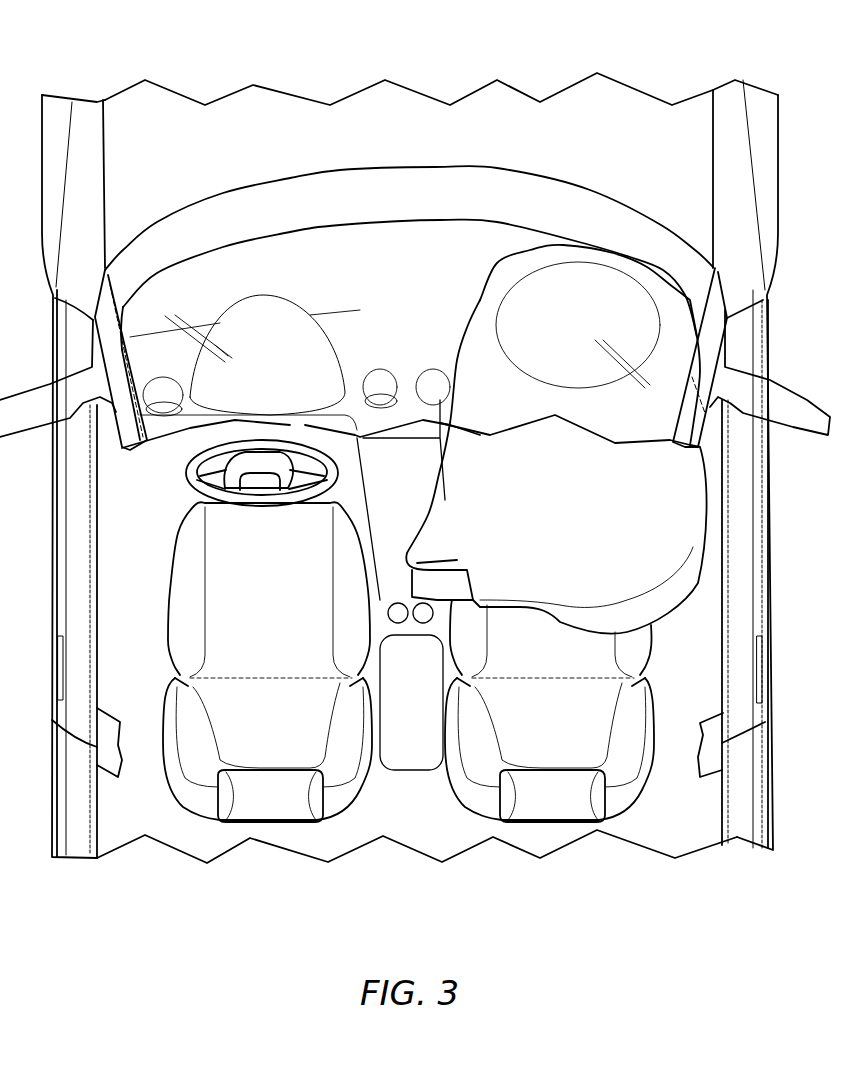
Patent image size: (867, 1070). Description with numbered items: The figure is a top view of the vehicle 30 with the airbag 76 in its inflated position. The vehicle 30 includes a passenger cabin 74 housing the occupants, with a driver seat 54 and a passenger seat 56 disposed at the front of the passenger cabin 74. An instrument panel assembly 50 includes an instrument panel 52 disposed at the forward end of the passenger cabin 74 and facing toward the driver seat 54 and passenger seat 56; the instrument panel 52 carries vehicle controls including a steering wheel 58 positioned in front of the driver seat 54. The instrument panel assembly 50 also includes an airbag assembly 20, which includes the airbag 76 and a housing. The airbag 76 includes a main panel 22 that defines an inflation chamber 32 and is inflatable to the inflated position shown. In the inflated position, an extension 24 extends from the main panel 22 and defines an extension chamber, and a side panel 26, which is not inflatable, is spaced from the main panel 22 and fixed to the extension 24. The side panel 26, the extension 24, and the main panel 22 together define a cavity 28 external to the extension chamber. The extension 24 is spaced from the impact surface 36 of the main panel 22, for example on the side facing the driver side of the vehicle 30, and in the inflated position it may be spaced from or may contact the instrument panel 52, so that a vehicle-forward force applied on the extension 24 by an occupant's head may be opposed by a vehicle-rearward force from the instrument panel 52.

The airbag assembly 20 is at (476, 296).
The main panel 22 is at (665, 490).
The extension 24 is at (428, 520).
The side panel 26 is at (425, 622).
The cavity 28 is at (455, 587).
The vehicle 30 is at (140, 108).
The inflation chamber 32 is at (640, 550).
The impact surface 36 is at (582, 617).
The instrument panel assembly 50 is at (318, 300).
The instrument panel 52 is at (362, 340).
The driver seat 54 is at (265, 740).
The passenger seat 56 is at (550, 740).
The steering wheel 58 is at (195, 465).
The passenger cabin 74 is at (147, 563).
The airbag 76 is at (518, 254).